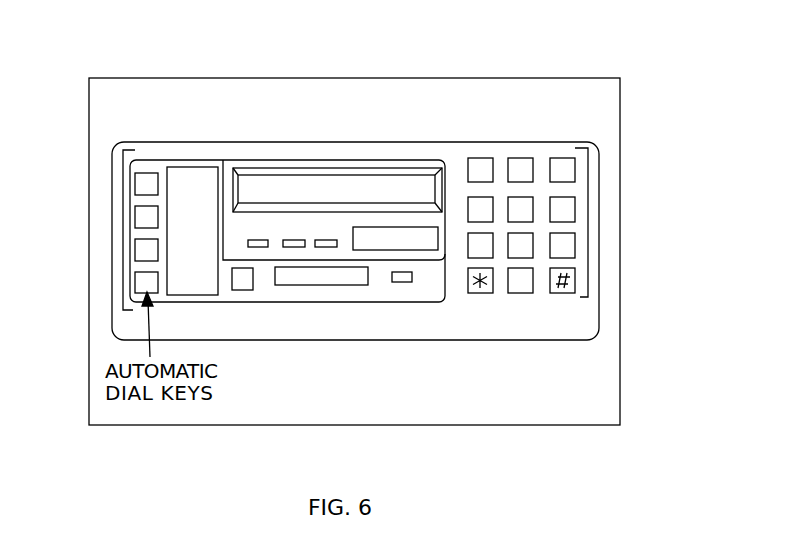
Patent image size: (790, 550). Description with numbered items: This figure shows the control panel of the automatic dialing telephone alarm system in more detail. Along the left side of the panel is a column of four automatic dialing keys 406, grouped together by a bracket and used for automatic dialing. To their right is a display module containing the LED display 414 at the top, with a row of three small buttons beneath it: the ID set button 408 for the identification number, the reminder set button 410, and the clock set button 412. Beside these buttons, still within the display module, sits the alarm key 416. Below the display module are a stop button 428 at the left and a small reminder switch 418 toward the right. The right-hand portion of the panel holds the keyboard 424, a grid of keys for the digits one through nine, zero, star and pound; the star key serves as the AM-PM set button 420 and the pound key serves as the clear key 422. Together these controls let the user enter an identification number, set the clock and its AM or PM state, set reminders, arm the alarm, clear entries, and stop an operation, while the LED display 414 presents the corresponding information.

The automatic dialing keys 406 is at (112, 204).
The ID set button 408 is at (257, 240).
The reminder set button 410 is at (292, 240).
The clock set button 412 is at (328, 240).
The LED display 414 is at (393, 188).
The alarm key 416 is at (437, 223).
The reminder switch 418 is at (404, 283).
The AM-PM set button 420 is at (483, 294).
The clear key 422 is at (571, 294).
The keyboard 424 is at (600, 228).
The stop button 428 is at (245, 291).